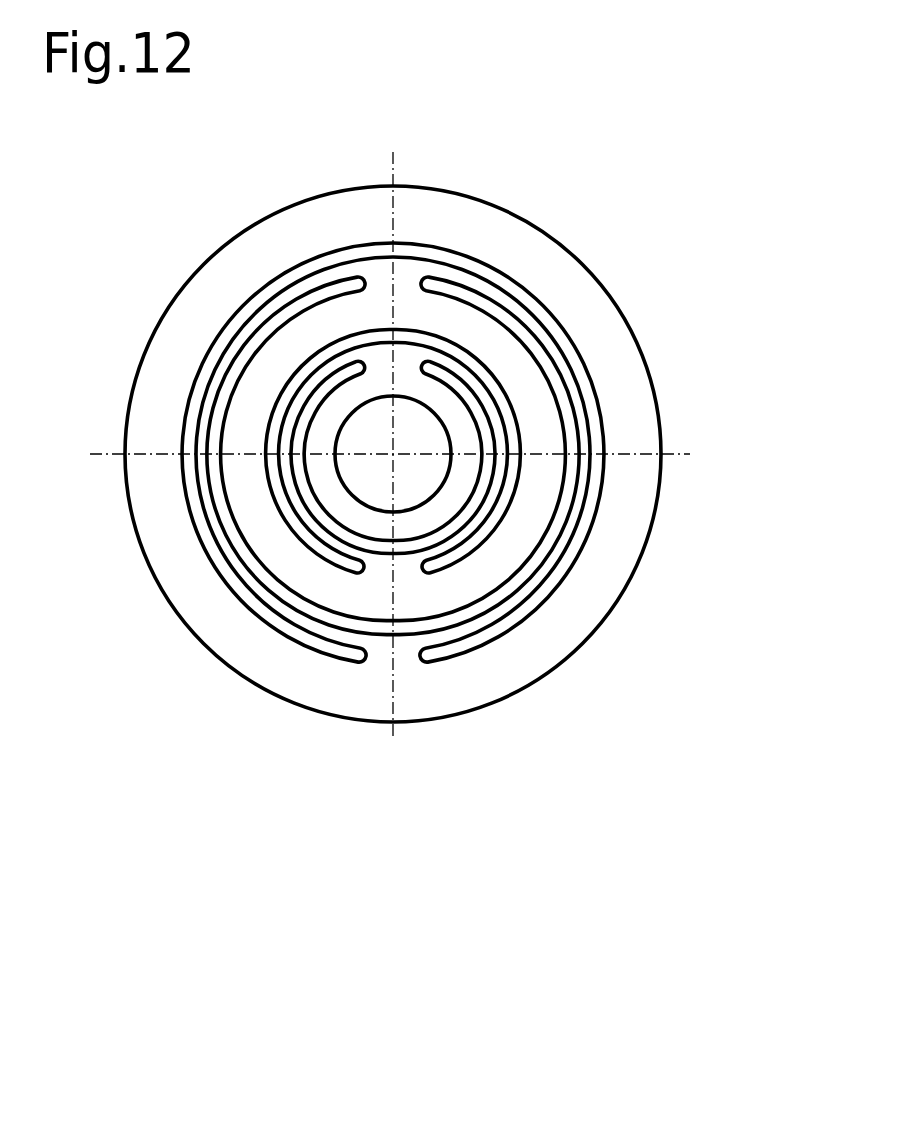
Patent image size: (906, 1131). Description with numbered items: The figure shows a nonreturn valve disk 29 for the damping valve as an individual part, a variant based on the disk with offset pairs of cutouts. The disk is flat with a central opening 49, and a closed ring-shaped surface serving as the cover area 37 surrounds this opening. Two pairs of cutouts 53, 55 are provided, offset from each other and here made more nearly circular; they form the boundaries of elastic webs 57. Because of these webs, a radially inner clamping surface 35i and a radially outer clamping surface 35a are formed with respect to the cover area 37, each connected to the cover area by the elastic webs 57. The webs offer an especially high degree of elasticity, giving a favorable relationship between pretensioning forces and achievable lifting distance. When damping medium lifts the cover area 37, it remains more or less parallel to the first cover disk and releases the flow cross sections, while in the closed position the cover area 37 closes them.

The nonreturn valve disk 29 is at (257, 802).
The radially outer clamping surface 35a is at (562, 628).
The radially inner clamping surface 35i is at (457, 425).
The cover area 37 is at (253, 497).
The central opening 49 is at (410, 427).
The semicircular cutout 53 is at (337, 378).
The semicircular cutout 55 is at (287, 398).
The elastic web 57 is at (578, 437).